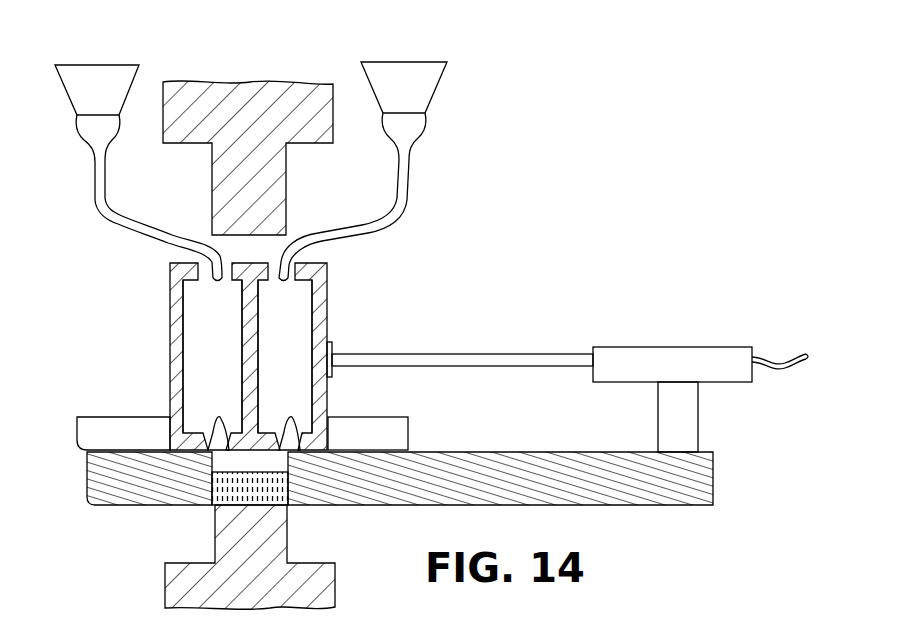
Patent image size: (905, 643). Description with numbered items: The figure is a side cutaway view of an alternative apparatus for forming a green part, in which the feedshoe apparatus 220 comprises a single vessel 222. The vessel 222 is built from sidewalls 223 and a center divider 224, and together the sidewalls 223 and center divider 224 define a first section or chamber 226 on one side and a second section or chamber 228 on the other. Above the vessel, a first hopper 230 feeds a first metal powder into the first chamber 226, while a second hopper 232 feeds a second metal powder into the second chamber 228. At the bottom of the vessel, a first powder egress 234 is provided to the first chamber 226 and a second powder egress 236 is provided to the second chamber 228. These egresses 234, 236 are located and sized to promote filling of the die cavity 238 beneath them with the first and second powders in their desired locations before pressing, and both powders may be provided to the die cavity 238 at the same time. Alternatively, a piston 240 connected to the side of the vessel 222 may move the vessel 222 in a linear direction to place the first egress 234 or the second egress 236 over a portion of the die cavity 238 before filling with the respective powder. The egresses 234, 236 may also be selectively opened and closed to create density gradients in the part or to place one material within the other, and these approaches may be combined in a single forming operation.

The feedshoe apparatus 220 is at (358, 291).
The vessel 222 is at (328, 268).
The sidewalls 223 is at (172, 278).
The center divider 224 is at (250, 347).
The first section or chamber 226 is at (203, 313).
The second section or chamber 228 is at (273, 387).
The first hopper 230 is at (94, 82).
The second hopper 232 is at (402, 75).
The first powder egress 234 is at (214, 421).
The second powder egress 236 is at (291, 417).
The die cavity 238 is at (288, 468).
The piston 240 is at (463, 361).